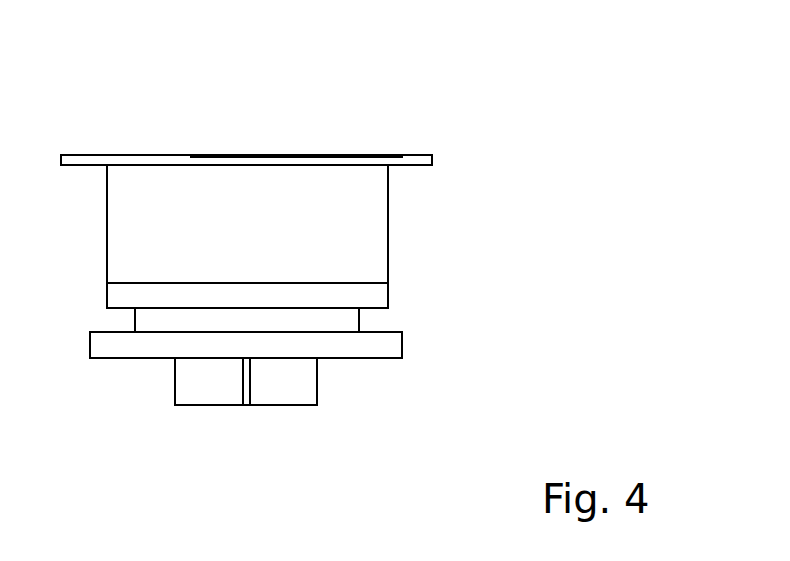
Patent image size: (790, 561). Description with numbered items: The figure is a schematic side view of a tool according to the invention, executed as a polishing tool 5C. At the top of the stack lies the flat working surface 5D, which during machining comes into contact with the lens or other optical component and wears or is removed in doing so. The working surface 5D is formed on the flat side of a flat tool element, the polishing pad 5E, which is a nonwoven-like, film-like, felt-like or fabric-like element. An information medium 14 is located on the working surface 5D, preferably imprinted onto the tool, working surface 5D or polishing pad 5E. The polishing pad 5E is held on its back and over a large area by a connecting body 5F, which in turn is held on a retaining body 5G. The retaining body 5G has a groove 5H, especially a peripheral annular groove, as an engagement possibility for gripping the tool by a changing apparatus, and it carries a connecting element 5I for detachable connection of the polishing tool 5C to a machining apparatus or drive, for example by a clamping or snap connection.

The polishing tool 5C is at (392, 118).
The working surface 5D is at (415, 155).
The information medium 14 is at (242, 153).
The polishing pad 5E is at (407, 165).
The connecting body 5F is at (360, 255).
The retaining body 5G is at (360, 297).
The groove 5H is at (373, 318).
The connecting element 5I is at (317, 382).